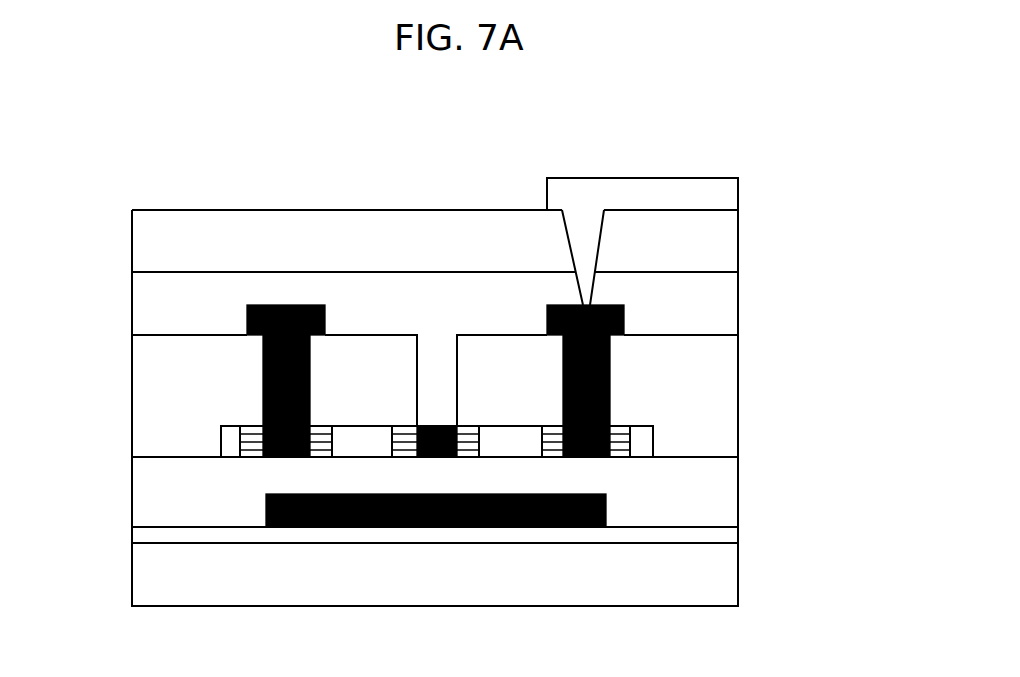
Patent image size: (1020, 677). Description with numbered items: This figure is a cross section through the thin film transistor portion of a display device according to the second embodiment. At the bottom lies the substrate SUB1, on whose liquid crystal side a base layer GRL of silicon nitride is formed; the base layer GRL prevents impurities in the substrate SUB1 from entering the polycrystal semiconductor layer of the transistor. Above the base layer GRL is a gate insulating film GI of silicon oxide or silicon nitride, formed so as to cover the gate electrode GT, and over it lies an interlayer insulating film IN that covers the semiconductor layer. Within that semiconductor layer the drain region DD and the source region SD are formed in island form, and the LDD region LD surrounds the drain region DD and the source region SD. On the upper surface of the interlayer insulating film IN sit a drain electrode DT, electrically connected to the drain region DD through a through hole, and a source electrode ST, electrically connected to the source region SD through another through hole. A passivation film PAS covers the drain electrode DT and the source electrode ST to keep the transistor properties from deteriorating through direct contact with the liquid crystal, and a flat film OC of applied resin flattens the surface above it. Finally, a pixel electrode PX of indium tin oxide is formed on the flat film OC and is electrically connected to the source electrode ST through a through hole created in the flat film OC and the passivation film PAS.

The pixel electrode PX is at (658, 194).
The flat film OC is at (697, 242).
The passivation film PAS is at (697, 294).
The source electrode ST is at (624, 318).
The drain electrode DT is at (247, 320).
The interlayer insulating film IN is at (707, 400).
The LDD region LD is at (620, 442).
The gate insulating film GI is at (707, 502).
The base layer GRL is at (713, 536).
The substrate SUB1 is at (702, 580).
The drain region DD is at (272, 457).
The gate electrode GT is at (352, 527).
The source region SD is at (593, 457).